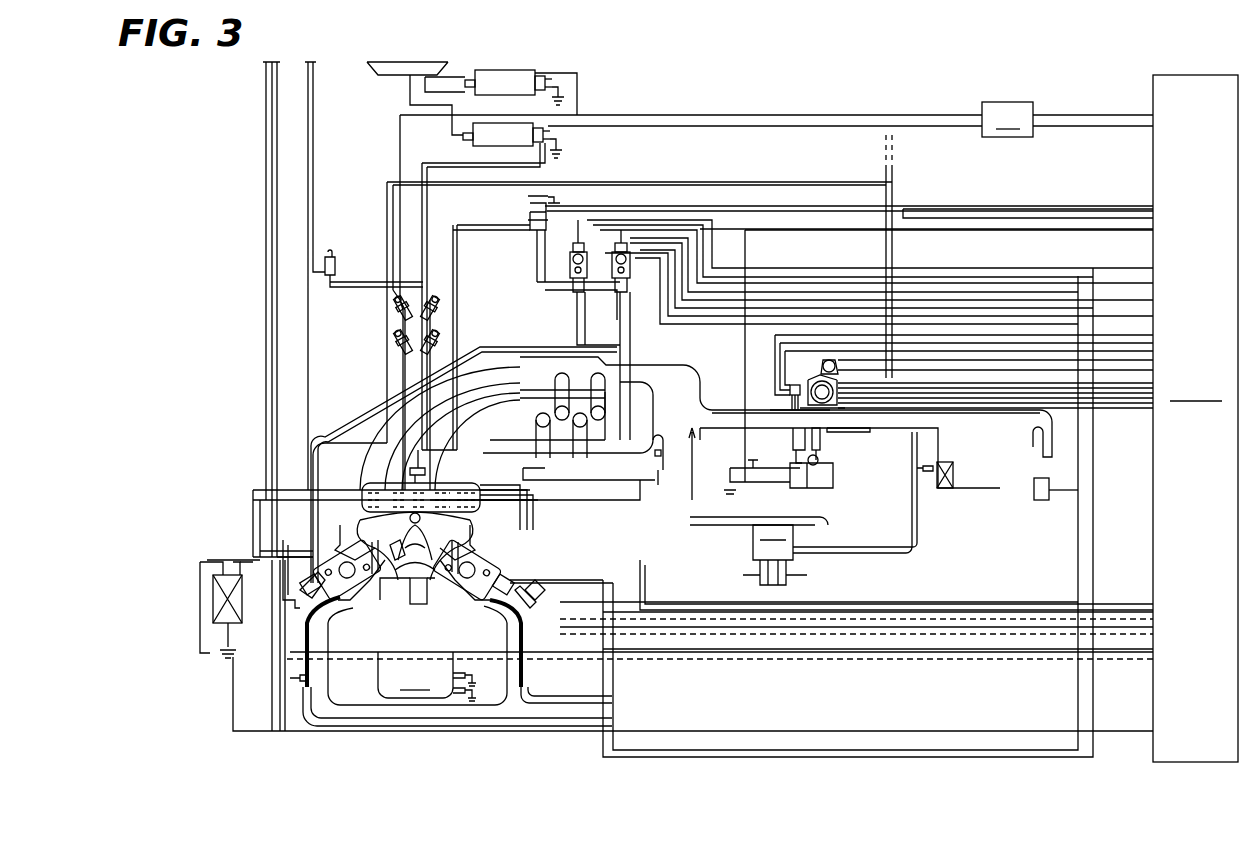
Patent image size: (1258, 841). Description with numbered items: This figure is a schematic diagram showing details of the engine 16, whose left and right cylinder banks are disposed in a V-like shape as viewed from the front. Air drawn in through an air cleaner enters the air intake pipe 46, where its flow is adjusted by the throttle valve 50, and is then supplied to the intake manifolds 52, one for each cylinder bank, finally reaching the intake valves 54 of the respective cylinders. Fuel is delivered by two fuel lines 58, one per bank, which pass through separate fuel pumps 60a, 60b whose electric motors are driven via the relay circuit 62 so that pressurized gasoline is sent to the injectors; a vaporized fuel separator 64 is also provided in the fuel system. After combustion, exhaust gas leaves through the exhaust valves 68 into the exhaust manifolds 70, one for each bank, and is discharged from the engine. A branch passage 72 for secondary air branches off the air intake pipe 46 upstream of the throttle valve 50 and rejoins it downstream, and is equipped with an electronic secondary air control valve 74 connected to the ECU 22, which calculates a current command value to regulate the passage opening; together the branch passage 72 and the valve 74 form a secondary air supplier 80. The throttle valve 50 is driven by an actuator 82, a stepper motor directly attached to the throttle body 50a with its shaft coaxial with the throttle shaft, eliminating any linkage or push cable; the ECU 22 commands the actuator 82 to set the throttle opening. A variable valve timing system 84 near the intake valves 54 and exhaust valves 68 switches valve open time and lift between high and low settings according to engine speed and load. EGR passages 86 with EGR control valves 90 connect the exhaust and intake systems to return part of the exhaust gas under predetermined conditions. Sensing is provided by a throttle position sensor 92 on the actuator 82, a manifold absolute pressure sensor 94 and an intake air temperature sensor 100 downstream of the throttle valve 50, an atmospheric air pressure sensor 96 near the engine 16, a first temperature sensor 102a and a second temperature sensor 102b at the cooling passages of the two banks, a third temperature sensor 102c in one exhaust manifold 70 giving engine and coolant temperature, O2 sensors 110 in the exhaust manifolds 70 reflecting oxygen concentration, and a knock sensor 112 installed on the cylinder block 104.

The engine 16 is at (246, 456).
The ECU 22 is at (1200, 72).
The air intake pipe 46 is at (722, 430).
The throttle valve 50 is at (792, 423).
The throttle body 50a is at (780, 400).
The intake manifolds 52 is at (654, 360).
The intake valves 54 is at (478, 588).
The fuel lines 58 is at (396, 148).
The fuel pump 60a is at (529, 70).
The fuel pump 60b is at (475, 148).
The relay circuit 62 is at (1067, 119).
The vaporized fuel separator 64 is at (382, 78).
The exhaust valves 68 is at (470, 590).
The exhaust manifolds 70 is at (322, 724).
The branch passage 72 is at (822, 453).
The electronic secondary air control valve (EACV) 74 is at (824, 479).
The secondary air supplier 80 is at (846, 440).
The actuator (stepper motor) 82 is at (810, 381).
The variable valve timing system 84 is at (318, 538).
The EGR passages 86 is at (575, 322).
The EGR control valves 90 is at (572, 257).
The throttle position sensor 92 is at (823, 362).
The manifold absolute pressure sensor 94 is at (790, 390).
The atmospheric air pressure sensor 96 is at (1040, 500).
The intake air temperature sensor 100 is at (655, 468).
The first temperature sensor 102a is at (492, 602).
The second temperature sensor 102b is at (312, 630).
The third temperature sensor 102c is at (302, 721).
The cylinder block 104 is at (427, 676).
The O2 sensors 110 is at (300, 612).
The knock sensor 112 is at (410, 600).